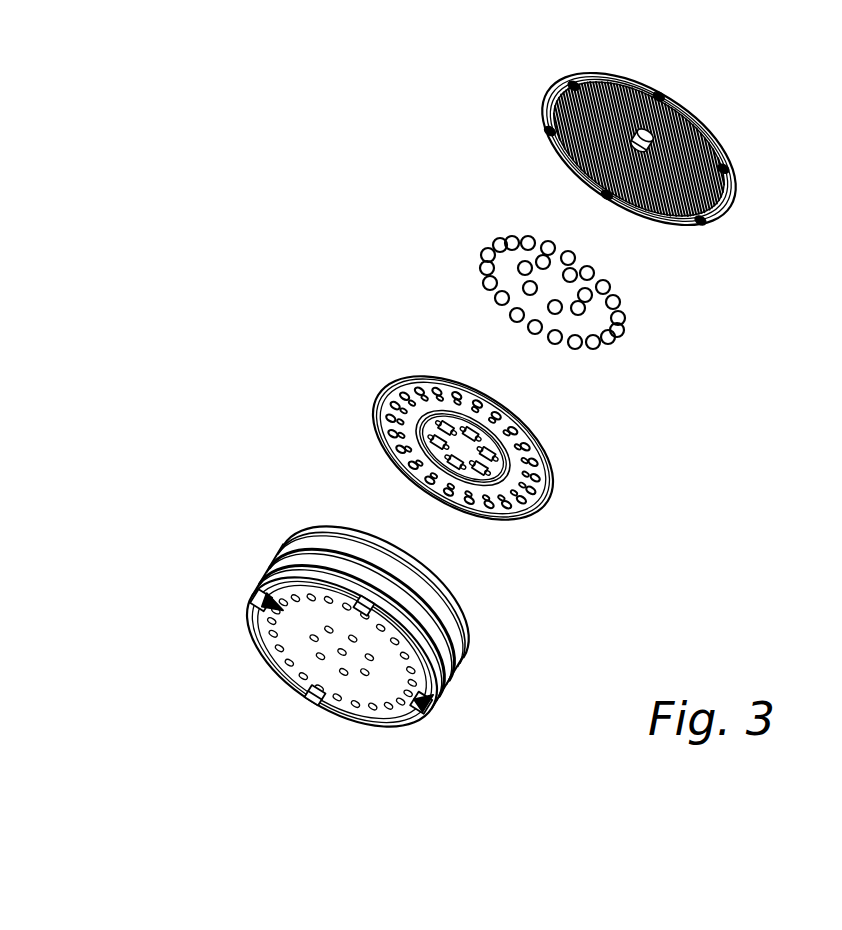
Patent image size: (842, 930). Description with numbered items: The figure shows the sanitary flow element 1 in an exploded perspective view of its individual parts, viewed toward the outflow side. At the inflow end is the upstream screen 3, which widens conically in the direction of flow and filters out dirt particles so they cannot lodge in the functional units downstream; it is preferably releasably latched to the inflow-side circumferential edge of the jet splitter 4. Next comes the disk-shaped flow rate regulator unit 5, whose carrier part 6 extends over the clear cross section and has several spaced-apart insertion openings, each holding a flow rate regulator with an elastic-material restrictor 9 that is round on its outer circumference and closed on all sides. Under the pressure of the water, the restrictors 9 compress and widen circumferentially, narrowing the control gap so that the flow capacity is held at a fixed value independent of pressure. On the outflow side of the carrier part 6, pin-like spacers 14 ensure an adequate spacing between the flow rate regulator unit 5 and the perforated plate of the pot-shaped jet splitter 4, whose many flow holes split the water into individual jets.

The sanitary flow element 1 is at (272, 168).
The upstream screen 3 is at (724, 141).
The jet splitter 4 is at (487, 652).
The flow rate regulator unit 5 is at (562, 458).
The carrier part 6 is at (405, 372).
The restrictor 9 is at (508, 238).
The spacers 14 is at (490, 477).